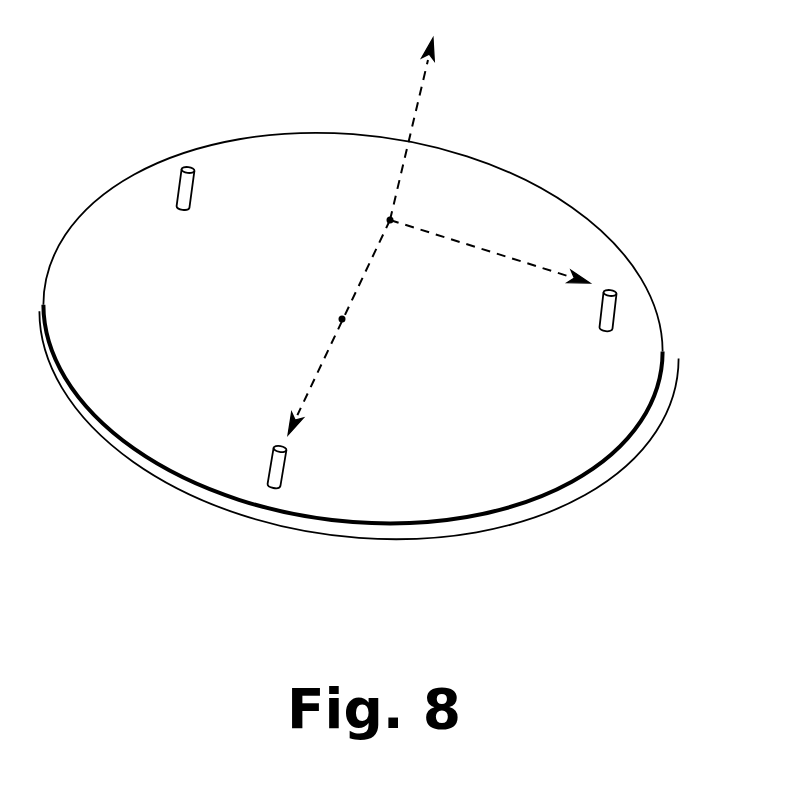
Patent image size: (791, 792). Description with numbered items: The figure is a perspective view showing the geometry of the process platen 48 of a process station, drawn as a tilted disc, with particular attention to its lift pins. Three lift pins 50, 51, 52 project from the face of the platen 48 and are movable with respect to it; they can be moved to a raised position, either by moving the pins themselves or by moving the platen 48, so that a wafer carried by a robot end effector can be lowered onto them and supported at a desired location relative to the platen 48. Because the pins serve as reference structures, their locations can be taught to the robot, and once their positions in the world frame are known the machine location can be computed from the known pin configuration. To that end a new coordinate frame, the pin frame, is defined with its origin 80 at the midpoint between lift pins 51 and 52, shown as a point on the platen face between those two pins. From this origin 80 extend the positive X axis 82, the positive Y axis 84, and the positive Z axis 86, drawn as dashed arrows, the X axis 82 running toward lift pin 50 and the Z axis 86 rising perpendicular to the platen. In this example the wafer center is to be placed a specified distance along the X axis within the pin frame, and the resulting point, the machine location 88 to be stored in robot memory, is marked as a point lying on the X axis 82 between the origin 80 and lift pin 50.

The process platen 48 is at (137, 540).
The lift pin 50 is at (281, 471).
The lift pin 51 is at (617, 308).
The lift pin 52 is at (195, 181).
The origin of pin frame 80 is at (392, 219).
The positive X axis 82 is at (293, 423).
The positive Y axis 84 is at (566, 272).
The positive Z axis 86 is at (436, 50).
The machine location 88 is at (346, 323).